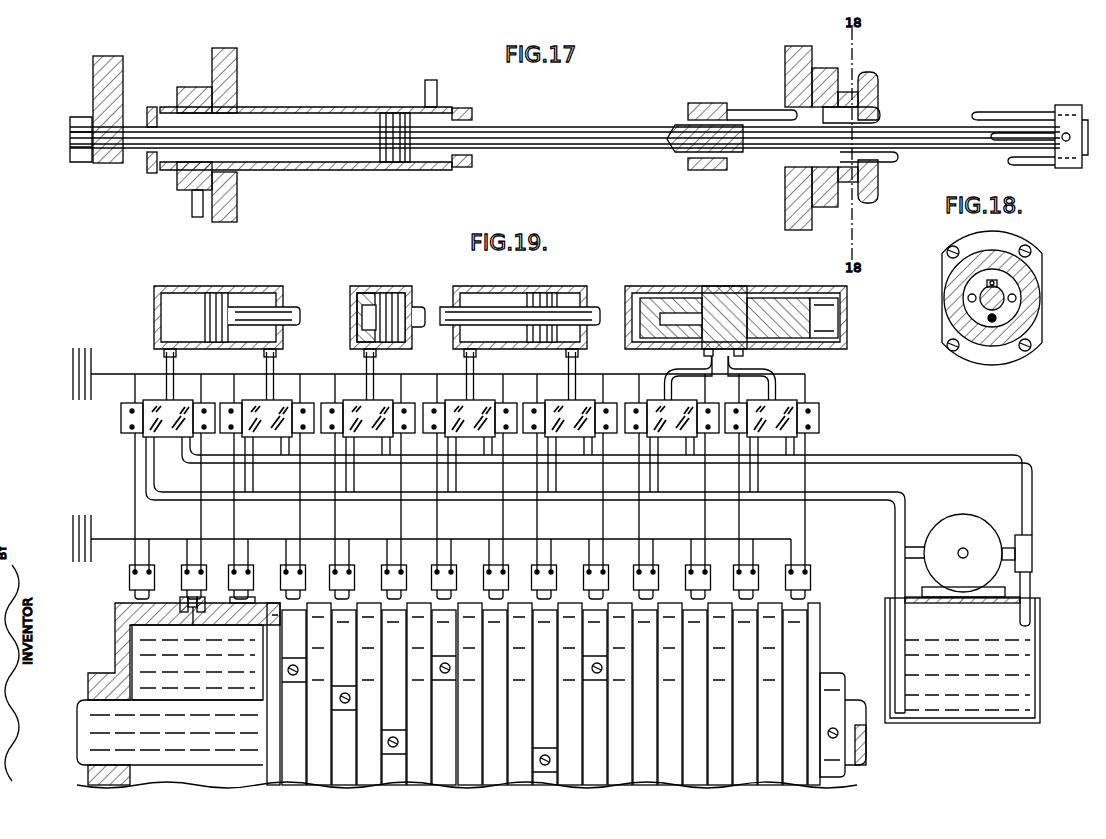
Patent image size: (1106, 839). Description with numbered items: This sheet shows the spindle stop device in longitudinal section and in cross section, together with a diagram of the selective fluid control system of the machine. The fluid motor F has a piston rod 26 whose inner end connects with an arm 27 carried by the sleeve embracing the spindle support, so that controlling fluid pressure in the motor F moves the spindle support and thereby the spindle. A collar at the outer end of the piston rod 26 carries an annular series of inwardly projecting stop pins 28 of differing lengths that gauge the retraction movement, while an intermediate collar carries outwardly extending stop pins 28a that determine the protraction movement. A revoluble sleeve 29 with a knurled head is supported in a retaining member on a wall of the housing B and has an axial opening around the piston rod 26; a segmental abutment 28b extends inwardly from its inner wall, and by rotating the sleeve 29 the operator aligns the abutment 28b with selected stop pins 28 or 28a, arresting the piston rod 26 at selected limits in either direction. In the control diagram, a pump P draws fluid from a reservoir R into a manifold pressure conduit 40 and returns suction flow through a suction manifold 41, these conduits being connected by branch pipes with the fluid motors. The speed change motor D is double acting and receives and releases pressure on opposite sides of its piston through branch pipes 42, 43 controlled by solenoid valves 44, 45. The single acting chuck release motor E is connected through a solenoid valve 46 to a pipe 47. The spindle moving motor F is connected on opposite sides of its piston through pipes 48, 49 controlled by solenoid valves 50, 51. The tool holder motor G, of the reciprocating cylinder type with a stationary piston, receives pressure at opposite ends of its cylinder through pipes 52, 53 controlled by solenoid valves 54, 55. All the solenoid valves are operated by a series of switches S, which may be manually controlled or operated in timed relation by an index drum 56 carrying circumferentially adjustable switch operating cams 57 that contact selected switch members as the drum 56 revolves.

In FIG. 17, the piston rod 26 is at (566, 152).
In FIG. 18, the piston rod 26 is at (980, 303).
In FIG. 17, the arm 27 is at (122, 108).
In FIG. 17, the housing B is at (238, 62).
In FIG. 17, the fluid motor F is at (312, 107).
In FIG. 19, the fluid motor F is at (588, 290).
In FIG. 17, the revoluble sleeve 29 is at (880, 82).
In FIG. 18, the revoluble sleeve 29 is at (1040, 300).
In FIG. 17, the stop pins 28 is at (1000, 112).
In FIG. 17, the stop pins 28a is at (896, 165).
In FIG. 17, the segmental abutment 28b is at (882, 115).
In FIG. 18, the segmental abutment 28b is at (982, 272).
In FIG. 19, the fluid motor D is at (284, 290).
In FIG. 19, the fluid motor E is at (412, 290).
In FIG. 19, the fluid motor G is at (660, 286).
In FIG. 19, the branch pipe 42 is at (278, 373).
In FIG. 19, the branch pipe 43 is at (178, 374).
In FIG. 19, the pipe 47 is at (376, 385).
In FIG. 19, the pipe 48 is at (478, 372).
In FIG. 19, the pipe 49 is at (578, 372).
In FIG. 19, the pipe 52 is at (668, 370).
In FIG. 19, the pipe 53 is at (784, 370).
In FIG. 19, the solenoid valve 44 is at (171, 440).
In FIG. 19, the solenoid valve 45 is at (269, 438).
In FIG. 19, the solenoid valve 46 is at (370, 438).
In FIG. 19, the solenoid valve 50 is at (472, 438).
In FIG. 19, the solenoid valve 51 is at (572, 438).
In FIG. 19, the solenoid valve 54 is at (674, 438).
In FIG. 19, the solenoid valve 55 is at (774, 438).
In FIG. 19, the manifold pressure conduit 40 is at (1034, 481).
In FIG. 19, the suction manifold 41 is at (895, 529).
In FIG. 19, the pump P is at (962, 526).
In FIG. 19, the fluid reservoir R is at (1042, 650).
In FIG. 19, the switches S is at (170, 564).
In FIG. 19, the index drum 56 is at (115, 648).
In FIG. 19, the switch operating cams 57 is at (293, 690).